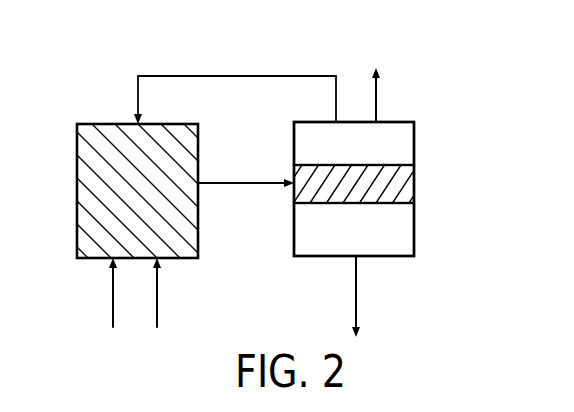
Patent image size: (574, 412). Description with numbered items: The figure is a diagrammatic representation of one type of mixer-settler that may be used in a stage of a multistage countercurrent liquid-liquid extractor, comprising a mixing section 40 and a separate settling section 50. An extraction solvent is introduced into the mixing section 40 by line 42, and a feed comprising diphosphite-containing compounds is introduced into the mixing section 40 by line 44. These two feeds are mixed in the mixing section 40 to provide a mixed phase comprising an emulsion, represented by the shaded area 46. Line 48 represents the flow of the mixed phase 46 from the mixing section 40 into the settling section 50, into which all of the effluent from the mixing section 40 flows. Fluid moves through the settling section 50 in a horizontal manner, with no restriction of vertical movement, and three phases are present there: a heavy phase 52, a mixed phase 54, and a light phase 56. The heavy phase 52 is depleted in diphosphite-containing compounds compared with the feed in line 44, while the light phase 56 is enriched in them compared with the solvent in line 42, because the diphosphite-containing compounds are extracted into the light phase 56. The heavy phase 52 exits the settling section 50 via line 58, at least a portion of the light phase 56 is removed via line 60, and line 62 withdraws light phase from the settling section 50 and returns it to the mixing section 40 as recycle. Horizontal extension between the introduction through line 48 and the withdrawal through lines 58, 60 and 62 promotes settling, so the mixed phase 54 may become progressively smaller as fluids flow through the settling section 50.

The mixing section 40 is at (77, 165).
The line 42 is at (113, 302).
The line 44 is at (157, 298).
The mixed phase 46 is at (92, 211).
The line 48 is at (246, 181).
The settling section 50 is at (294, 236).
The heavy phase 52 is at (399, 229).
The mixed phase 54 is at (399, 184).
The light phase 56 is at (399, 142).
The line 58 is at (358, 292).
The line 60 is at (378, 88).
The line 62 is at (283, 76).